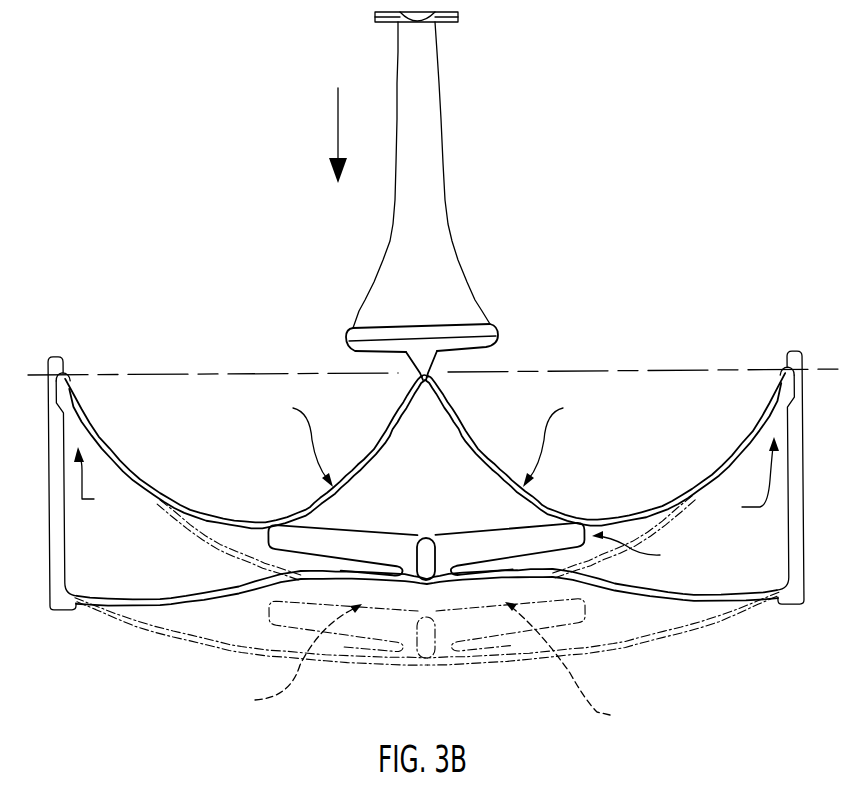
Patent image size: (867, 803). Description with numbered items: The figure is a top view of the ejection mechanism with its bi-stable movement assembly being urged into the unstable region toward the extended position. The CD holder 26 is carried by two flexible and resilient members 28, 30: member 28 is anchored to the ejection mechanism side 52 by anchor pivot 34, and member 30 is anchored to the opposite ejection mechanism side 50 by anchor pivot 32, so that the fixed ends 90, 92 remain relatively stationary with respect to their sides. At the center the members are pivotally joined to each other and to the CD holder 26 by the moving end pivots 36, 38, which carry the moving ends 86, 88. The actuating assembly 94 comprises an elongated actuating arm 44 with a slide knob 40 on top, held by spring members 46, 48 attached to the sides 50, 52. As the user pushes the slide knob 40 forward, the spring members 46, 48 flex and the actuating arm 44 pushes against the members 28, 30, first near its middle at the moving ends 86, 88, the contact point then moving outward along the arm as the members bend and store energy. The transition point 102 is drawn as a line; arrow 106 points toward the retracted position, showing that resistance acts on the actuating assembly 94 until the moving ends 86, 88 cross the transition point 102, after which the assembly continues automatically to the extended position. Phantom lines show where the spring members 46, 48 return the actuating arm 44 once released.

The CD holder 26 is at (470, 185).
The flexible and resilient member 28 is at (657, 500).
The flexible and resilient member 30 is at (192, 503).
The anchor pivot 32 is at (69, 373).
The anchor pivot 34 is at (779, 365).
The moving end pivot 36 is at (431, 378).
The moving end pivot 38 is at (418, 378).
The slide knob 40 is at (427, 538).
The actuating arm 44 is at (387, 542).
The spring member 46 is at (702, 588).
The spring member 48 is at (125, 700).
The ejection mechanism side 50 is at (49, 525).
The ejection mechanism side 52 is at (793, 502).
The moving end 86 is at (297, 555).
The moving end 88 is at (569, 562).
The fixed end 90 is at (94, 481).
The fixed end 92 is at (750, 479).
The actuating assembly 94 is at (636, 550).
The transition point 102 is at (192, 373).
The arrow 106 is at (338, 132).